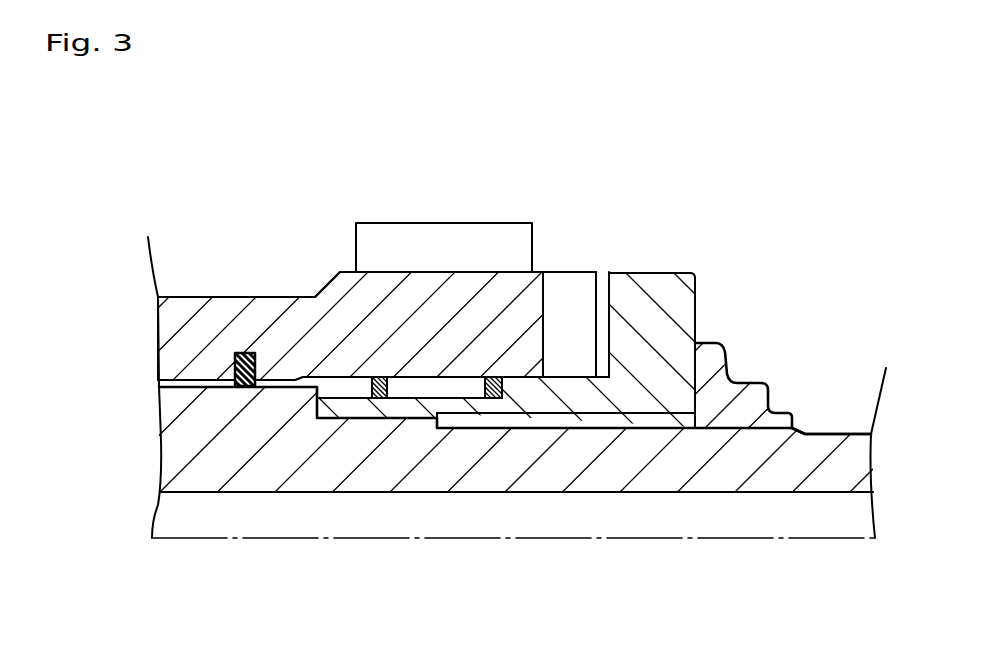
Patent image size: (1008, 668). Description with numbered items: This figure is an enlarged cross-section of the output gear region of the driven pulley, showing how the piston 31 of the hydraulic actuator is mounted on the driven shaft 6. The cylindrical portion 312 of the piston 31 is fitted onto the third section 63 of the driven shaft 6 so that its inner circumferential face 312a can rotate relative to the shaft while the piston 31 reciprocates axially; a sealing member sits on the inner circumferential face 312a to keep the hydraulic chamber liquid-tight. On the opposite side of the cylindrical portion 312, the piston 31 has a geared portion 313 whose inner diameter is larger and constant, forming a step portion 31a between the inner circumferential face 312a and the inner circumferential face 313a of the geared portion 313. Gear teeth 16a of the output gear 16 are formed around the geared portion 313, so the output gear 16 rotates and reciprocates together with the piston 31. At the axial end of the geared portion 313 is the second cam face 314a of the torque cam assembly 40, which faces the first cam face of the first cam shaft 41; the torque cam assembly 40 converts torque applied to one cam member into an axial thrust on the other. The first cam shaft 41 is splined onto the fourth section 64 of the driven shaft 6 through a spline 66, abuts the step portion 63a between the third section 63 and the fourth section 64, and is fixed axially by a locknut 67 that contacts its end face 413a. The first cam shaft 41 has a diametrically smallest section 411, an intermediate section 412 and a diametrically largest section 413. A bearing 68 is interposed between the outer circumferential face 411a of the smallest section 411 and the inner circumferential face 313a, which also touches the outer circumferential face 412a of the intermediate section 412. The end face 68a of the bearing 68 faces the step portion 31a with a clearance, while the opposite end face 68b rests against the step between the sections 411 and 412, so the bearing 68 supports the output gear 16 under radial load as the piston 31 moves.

The driven shaft 6 is at (836, 432).
The output gear 16 is at (465, 221).
The gear teeth 16a is at (382, 240).
The piston 31 is at (190, 295).
The step portion 31a is at (300, 340).
The cylindrical portion 312 is at (238, 332).
The inner circumferential face 312a is at (168, 383).
The geared portion 313 is at (470, 307).
The inner circumferential face 313a is at (333, 384).
The second cam face 314a is at (567, 300).
The torque cam assembly 40 is at (578, 272).
The first cam shaft 41 is at (673, 272).
The diametrically smallest section 411 is at (352, 397).
The outer circumferential face 411a is at (343, 397).
The intermediate section 412 is at (538, 400).
The outer circumferential face 412a is at (512, 377).
The diametrically largest section 413 is at (642, 310).
The end face 413a is at (697, 315).
The third section 63 is at (178, 443).
The step portion 63a is at (322, 402).
The fourth section 64 is at (447, 470).
The spline 66 is at (623, 420).
The locknut 67 is at (753, 392).
The bearing 68 is at (408, 374).
The end face 68a is at (367, 398).
The end face 68b is at (498, 400).